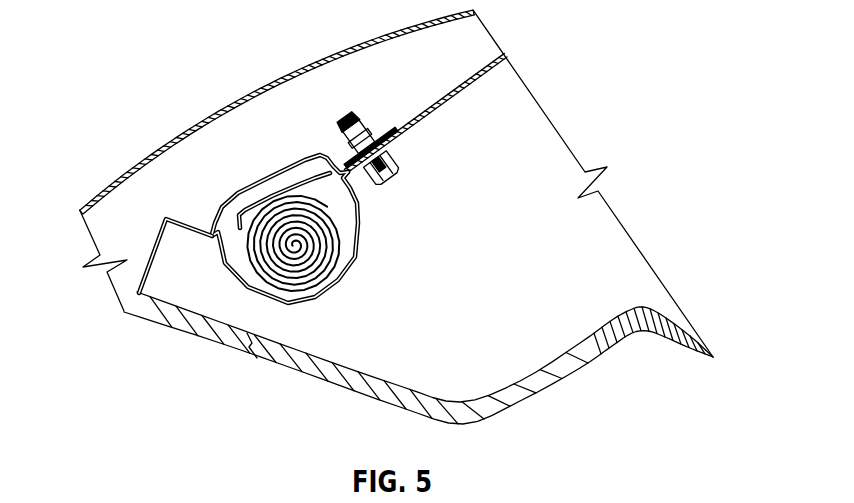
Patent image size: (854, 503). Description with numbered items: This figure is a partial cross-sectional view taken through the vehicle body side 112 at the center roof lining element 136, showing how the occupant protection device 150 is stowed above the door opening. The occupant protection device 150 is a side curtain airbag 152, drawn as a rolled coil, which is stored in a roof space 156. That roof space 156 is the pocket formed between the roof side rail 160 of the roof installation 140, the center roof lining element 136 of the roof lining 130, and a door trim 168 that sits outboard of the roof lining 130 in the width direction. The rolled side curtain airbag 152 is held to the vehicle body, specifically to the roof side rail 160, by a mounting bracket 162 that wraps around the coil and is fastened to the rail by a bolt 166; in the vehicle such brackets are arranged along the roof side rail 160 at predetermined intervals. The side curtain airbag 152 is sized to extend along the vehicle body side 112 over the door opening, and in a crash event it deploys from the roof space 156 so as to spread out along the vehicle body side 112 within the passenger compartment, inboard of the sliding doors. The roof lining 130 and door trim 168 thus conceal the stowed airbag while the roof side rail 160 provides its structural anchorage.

The vehicle body side 112 is at (594, 84).
The roof lining 130 is at (528, 376).
The center roof lining element 136 is at (567, 378).
The roof installation 140 is at (292, 68).
The occupant protection device 150 is at (246, 118).
The side curtain airbag 152 is at (318, 296).
The roof space 156 is at (547, 163).
The roof side rail 160 is at (445, 102).
The mounting bracket 162 is at (403, 143).
The bolt 166 is at (387, 181).
The door trim 168 is at (183, 331).